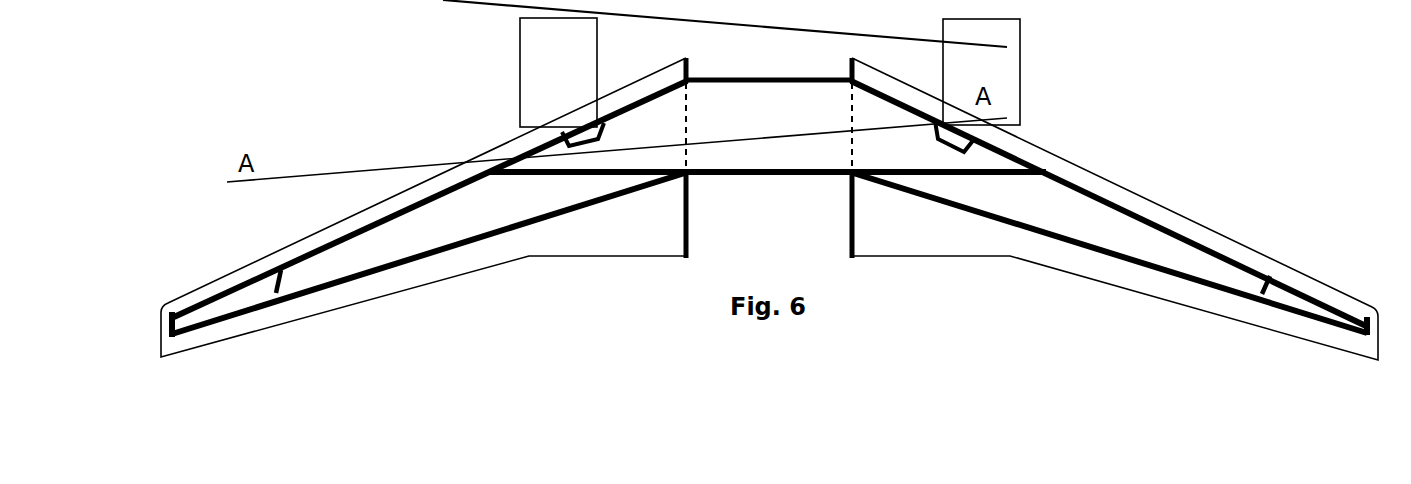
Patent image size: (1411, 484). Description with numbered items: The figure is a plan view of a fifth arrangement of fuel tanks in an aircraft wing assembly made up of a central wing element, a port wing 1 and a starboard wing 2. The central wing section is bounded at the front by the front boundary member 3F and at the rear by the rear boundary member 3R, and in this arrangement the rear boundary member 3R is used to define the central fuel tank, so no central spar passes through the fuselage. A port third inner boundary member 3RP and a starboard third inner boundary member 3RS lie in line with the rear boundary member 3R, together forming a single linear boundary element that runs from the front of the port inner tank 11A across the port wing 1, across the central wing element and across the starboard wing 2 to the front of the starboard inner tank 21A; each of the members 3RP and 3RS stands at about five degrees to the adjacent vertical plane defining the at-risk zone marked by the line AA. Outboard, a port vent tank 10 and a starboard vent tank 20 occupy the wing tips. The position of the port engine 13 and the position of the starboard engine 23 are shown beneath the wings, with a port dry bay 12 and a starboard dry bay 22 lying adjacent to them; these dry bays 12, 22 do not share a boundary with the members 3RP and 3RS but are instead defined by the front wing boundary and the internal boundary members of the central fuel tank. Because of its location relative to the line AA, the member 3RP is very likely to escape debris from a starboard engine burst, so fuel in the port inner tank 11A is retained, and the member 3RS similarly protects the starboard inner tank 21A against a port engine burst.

The port wing 1 is at (448, 277).
The starboard wing 2 is at (1048, 272).
The front boundary member 3F is at (692, 73).
The rear boundary member 3R is at (758, 177).
The port third inner boundary member 3RP is at (532, 173).
The starboard third inner boundary member 3RS is at (973, 175).
The port vent tank 10 is at (217, 302).
The starboard vent tank 20 is at (1285, 297).
The port inner tank 11A is at (415, 218).
The starboard inner tank 21A is at (1143, 263).
The port dry bay 12 is at (577, 135).
The starboard dry bay 22 is at (965, 137).
The position of port engine 13 is at (510, 45).
The position of starboard engine 23 is at (1010, 59).